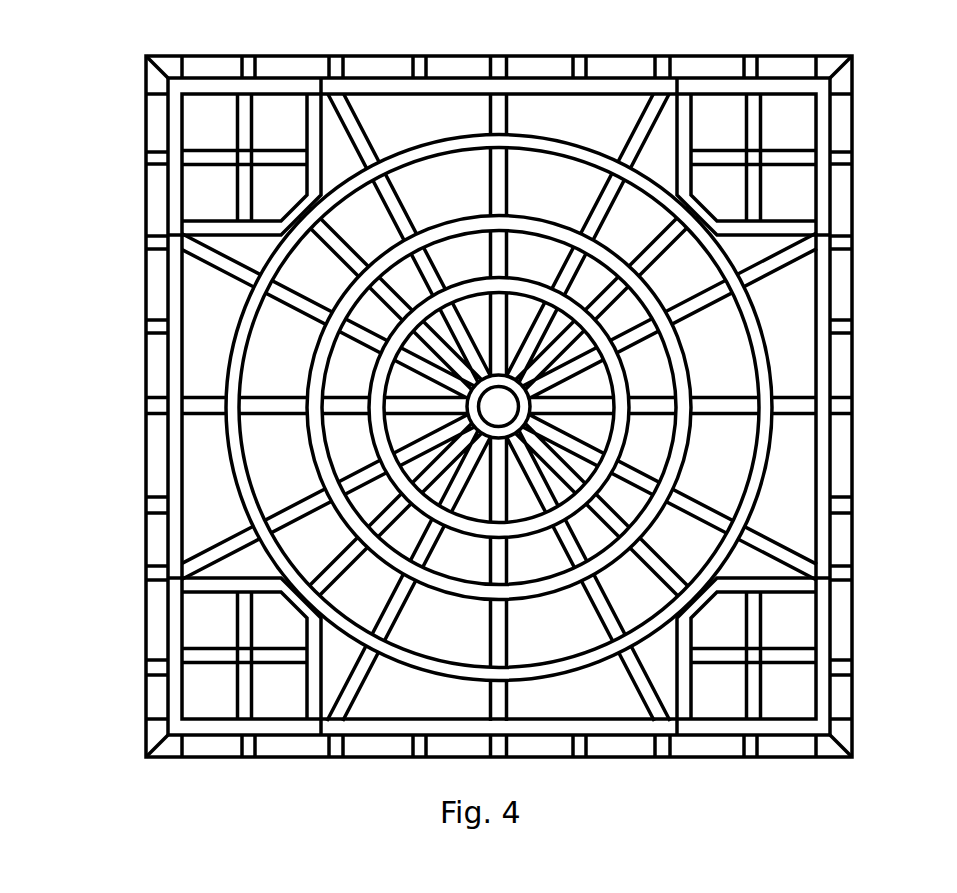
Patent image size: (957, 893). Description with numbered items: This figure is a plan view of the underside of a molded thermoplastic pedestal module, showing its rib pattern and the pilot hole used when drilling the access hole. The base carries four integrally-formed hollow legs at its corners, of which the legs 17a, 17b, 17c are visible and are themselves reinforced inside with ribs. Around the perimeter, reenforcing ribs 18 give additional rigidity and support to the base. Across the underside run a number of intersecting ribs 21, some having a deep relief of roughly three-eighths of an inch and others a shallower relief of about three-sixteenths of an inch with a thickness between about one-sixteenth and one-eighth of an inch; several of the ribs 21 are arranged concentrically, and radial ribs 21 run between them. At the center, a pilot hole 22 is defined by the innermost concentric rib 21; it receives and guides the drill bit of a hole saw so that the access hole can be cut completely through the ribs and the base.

The leg 17a is at (827, 697).
The leg 17b is at (172, 693).
The leg 17c is at (172, 183).
The reenforcing ribs 18 is at (753, 55).
The intersecting ribs 21 is at (287, 157).
The pilot hole 22 is at (490, 428).